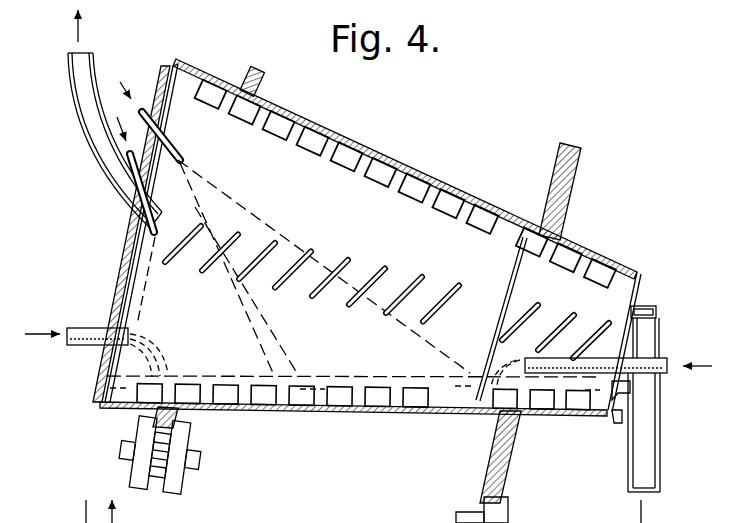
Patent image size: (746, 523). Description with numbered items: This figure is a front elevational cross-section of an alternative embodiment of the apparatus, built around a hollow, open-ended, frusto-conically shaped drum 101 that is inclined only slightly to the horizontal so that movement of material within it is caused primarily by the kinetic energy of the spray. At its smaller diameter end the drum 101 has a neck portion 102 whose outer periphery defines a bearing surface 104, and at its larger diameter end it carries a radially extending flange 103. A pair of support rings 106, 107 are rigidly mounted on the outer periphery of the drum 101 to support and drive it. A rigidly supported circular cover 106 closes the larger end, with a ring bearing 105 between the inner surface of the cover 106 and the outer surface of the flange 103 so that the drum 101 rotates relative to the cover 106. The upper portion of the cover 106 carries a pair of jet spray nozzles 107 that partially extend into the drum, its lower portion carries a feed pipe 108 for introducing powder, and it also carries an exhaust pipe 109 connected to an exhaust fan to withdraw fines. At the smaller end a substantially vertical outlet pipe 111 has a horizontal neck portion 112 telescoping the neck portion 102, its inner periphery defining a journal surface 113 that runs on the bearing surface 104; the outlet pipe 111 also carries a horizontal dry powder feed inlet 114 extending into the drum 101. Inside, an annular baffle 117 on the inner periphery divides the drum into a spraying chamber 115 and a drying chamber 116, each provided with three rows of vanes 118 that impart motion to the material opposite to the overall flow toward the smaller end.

The drum 101 is at (413, 157).
The neck portion 102 is at (648, 323).
The radially extending flange 103 is at (180, 84).
The bearing surface 104 is at (634, 308).
The ring bearing 105 is at (97, 399).
The circular cover 106 is at (262, 80).
The jet spray nozzles 107 is at (166, 200).
The feed pipe 108 is at (80, 327).
The exhaust pipe 109 is at (84, 128).
The outlet pipe 111 is at (660, 437).
The neck portion 112 is at (637, 383).
The journal surface 113 is at (617, 397).
The dry powder feed inlet 114 is at (663, 373).
The spraying chamber 115 is at (358, 224).
The drying chamber 116 is at (581, 302).
The annular baffle 117 is at (474, 380).
The vanes 118 is at (531, 259).